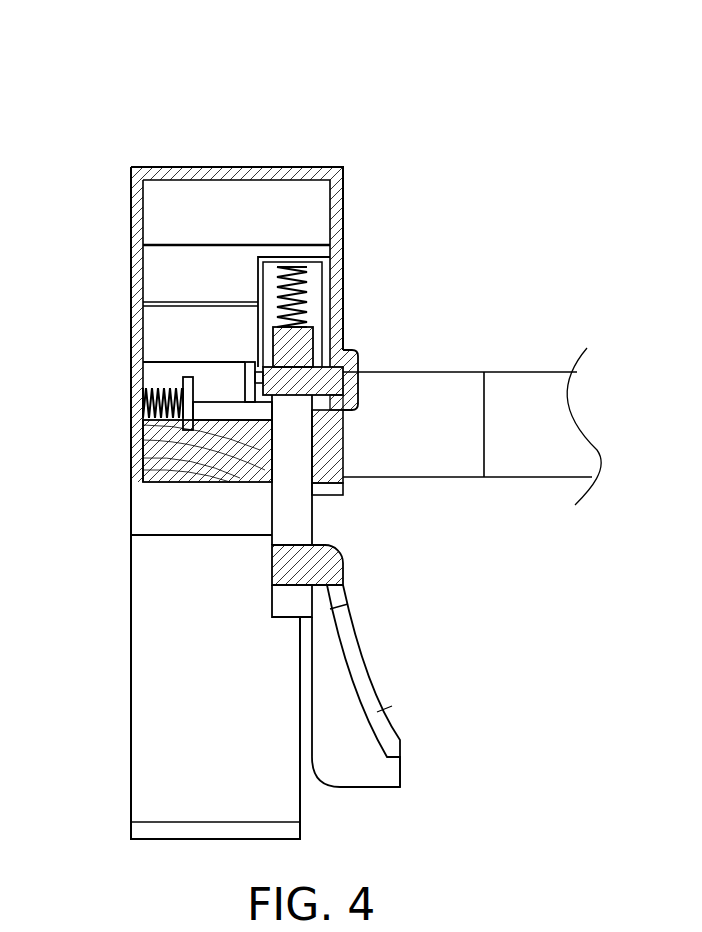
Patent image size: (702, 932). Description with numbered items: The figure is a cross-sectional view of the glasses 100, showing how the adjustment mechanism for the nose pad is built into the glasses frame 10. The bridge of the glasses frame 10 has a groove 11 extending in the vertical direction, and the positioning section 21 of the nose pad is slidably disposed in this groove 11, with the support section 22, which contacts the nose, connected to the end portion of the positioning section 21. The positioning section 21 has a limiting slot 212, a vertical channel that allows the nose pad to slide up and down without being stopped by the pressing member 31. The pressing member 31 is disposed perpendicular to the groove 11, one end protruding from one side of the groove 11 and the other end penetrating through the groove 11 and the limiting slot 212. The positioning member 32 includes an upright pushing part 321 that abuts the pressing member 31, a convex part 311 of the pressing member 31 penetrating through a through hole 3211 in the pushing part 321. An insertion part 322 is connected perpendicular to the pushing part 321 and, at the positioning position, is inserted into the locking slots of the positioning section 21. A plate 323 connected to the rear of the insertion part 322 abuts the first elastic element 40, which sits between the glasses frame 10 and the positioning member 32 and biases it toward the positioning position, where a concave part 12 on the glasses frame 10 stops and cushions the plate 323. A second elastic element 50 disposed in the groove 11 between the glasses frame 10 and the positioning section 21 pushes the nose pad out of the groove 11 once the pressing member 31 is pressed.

The glasses 100 is at (530, 86).
The glasses frame 10 is at (318, 168).
The groove 11 is at (322, 277).
The concave part 12 is at (183, 410).
The positioning section 21 is at (310, 510).
The limiting slot 212 is at (297, 523).
The support section 22 is at (367, 727).
The pressing member 31 is at (360, 354).
The convex part 311 is at (335, 325).
The positioning member 32 is at (63, 435).
The pushing part 321 is at (170, 462).
The through hole 3211 is at (205, 480).
The insertion part 322 is at (240, 485).
The plate 323 is at (160, 438).
The first elastic element 40 is at (143, 395).
The second elastic element 50 is at (306, 292).